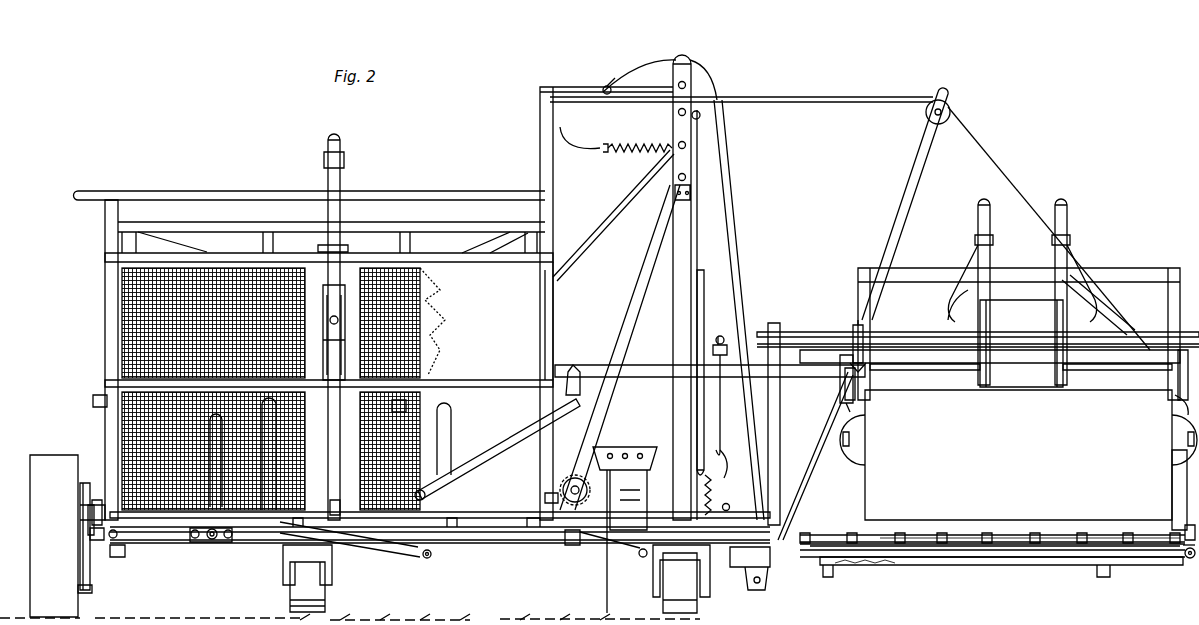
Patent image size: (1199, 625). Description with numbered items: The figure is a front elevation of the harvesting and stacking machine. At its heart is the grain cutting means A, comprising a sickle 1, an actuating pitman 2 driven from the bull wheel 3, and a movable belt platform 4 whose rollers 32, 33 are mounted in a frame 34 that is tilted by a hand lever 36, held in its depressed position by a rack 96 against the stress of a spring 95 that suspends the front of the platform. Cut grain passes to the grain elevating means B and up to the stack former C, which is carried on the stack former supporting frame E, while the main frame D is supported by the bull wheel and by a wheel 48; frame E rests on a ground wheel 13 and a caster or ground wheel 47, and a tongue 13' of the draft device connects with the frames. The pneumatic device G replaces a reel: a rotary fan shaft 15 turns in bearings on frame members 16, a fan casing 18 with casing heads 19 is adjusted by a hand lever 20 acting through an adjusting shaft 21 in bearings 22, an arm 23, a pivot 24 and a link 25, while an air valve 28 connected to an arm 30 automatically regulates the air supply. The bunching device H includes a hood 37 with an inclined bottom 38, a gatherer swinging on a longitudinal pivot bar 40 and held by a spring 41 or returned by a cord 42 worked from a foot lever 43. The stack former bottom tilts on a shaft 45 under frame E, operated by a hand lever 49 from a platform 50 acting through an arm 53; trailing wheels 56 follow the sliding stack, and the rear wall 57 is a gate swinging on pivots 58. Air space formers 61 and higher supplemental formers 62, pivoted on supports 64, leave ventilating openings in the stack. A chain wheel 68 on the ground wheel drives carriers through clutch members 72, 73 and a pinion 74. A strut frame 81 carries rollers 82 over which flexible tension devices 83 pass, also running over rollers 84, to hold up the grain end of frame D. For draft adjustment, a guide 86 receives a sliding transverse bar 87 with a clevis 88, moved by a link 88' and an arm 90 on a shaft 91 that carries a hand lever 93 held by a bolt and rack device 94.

The sickle 1 is at (920, 548).
The actuating pitman 2 is at (630, 550).
The bull wheel 3 is at (607, 590).
The movable belt platform 4 is at (945, 548).
The ground wheel 13 is at (67, 510).
The tongue 13' is at (557, 558).
The rotary fan shaft 15 is at (1085, 338).
The frame members 16 is at (868, 343).
The fan casing 18 is at (1021, 343).
The casing heads 19 is at (978, 369).
The hand lever 20 is at (735, 464).
The adjusting shaft 21 is at (912, 348).
The bearings 22 is at (855, 330).
The arm 23 is at (846, 372).
The pivot 24 is at (855, 394).
The link 25 is at (843, 400).
The air valve 28 is at (965, 312).
The arm 30 is at (991, 258).
The platform roller 32 is at (1055, 262).
The platform roller 33 is at (1180, 565).
The frame 34 is at (1047, 562).
The hand lever 36 is at (705, 418).
The hood 37 is at (645, 68).
The bottom 38 is at (598, 222).
The longitudinal pivot bar 40 is at (604, 86).
The spring 41 is at (640, 155).
The cord 42 is at (655, 142).
The foot lever 43 is at (665, 448).
The shaft 45 is at (90, 592).
The caster or ground wheel 47 is at (325, 608).
The wheel 48 is at (697, 606).
The hand lever 49 is at (328, 178).
The platform 50 is at (110, 385).
The arm 53 is at (340, 516).
The wheel 56 is at (125, 551).
The rear wall 57 is at (205, 217).
The pivots 58 is at (105, 225).
The air space former 61 is at (212, 455).
The supplemental air space former 62 is at (340, 398).
The support 64 is at (262, 490).
The chain wheel 68 is at (78, 598).
The clutch member 72 is at (90, 486).
The clutch member 73 is at (98, 500).
The pinion 74 is at (98, 541).
The strut frame 81 is at (922, 142).
The rollers 82 is at (1047, 228).
The flexible tension devices 83 is at (828, 100).
The rollers 84 is at (700, 117).
The guide 86 is at (487, 512).
The transverse bar 87 is at (500, 530).
The clevis 88 is at (440, 559).
The link 88' is at (497, 444).
The arm 90 is at (578, 426).
The shaft 91 is at (545, 498).
The hand lever 93 is at (577, 370).
The bolt and rack device 94 is at (560, 478).
The spring 95 is at (1185, 530).
The rack 96 is at (712, 501).
The grain cutting means A is at (992, 567).
The grain elevating means B is at (739, 310).
The stack former C is at (447, 321).
The main frame D is at (1190, 470).
The stack former supporting frame E is at (110, 350).
The pneumatic device G is at (1018, 394).
The bunching device H is at (606, 303).